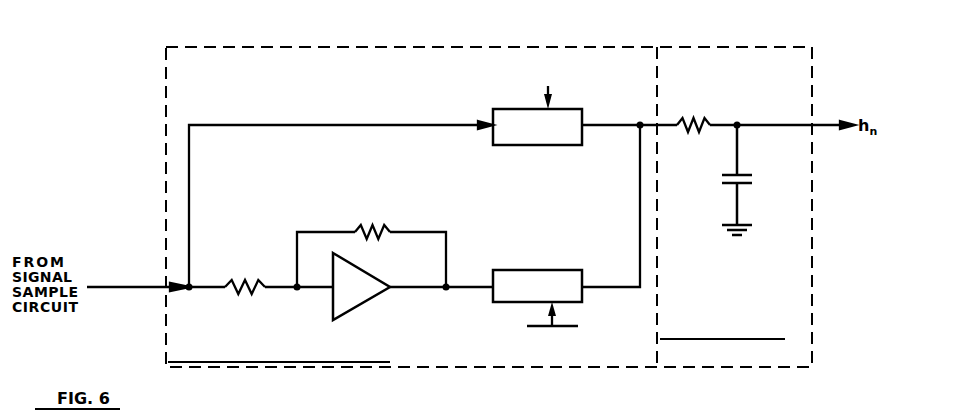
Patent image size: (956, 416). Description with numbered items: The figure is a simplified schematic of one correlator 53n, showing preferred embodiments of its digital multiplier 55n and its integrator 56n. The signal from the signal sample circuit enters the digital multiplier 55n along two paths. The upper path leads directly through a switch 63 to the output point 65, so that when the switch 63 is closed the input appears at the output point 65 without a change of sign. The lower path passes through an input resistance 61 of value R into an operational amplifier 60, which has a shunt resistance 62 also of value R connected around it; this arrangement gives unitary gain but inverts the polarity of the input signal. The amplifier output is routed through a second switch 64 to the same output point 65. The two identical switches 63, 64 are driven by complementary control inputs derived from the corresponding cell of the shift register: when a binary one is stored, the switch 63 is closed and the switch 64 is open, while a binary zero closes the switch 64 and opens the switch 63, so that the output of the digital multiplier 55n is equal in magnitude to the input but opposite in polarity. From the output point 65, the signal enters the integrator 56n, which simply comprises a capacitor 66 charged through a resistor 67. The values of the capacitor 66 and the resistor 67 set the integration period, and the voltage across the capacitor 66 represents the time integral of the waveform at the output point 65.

The correlator 53n is at (150, 55).
The digital multiplier 55n is at (409, 335).
The integrator 56n is at (700, 346).
The operational amplifier 60 is at (355, 290).
The input resistance 61 is at (252, 283).
The shunt resistance 62 is at (380, 228).
The switch 63 is at (520, 137).
The switch 64 is at (558, 270).
The output point 65 is at (638, 116).
The capacitor 66 is at (725, 183).
The resistor 67 is at (697, 118).